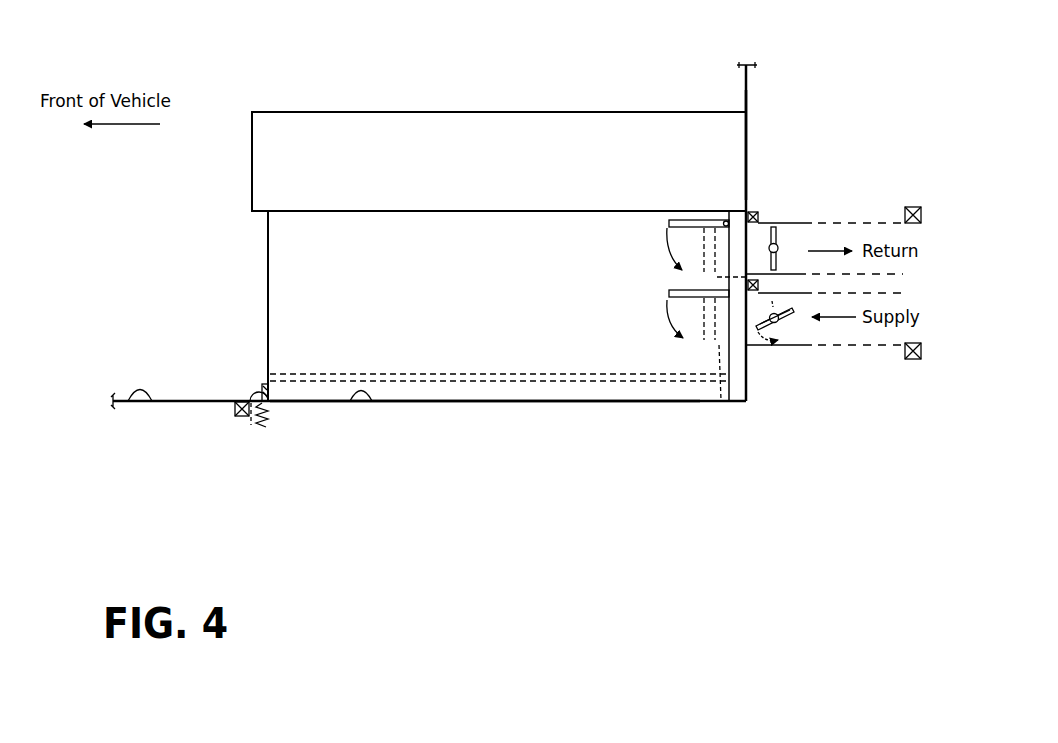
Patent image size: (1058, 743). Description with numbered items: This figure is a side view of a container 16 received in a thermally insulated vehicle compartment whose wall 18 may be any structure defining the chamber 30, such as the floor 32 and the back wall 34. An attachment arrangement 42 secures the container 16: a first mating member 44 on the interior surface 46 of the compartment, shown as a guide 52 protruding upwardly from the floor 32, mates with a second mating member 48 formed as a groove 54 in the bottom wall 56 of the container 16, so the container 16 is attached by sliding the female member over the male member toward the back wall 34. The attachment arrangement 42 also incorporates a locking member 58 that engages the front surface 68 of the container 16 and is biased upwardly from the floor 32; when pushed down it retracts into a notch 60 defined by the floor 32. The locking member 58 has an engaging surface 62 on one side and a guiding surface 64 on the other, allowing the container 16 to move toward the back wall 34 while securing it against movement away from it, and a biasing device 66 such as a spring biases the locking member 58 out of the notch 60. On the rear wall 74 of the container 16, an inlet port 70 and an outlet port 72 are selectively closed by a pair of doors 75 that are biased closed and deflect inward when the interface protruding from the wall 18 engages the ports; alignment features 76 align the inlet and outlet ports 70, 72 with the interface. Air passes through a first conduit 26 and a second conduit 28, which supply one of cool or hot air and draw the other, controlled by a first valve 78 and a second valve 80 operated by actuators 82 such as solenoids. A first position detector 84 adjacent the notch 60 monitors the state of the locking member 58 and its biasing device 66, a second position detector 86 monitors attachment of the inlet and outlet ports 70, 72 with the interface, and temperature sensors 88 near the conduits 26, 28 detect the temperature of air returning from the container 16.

The container 16 is at (250, 110).
The wall 18 is at (755, 88).
The first conduit 26 is at (845, 221).
The second conduit 28 is at (843, 346).
The chamber 30 is at (150, 333).
The floor 32 is at (482, 403).
The back wall 34 is at (744, 100).
The attachment arrangement 42 is at (345, 318).
The first mating member 44 is at (392, 372).
The interior surface 46 is at (129, 400).
The second mating member 48 is at (563, 368).
The guide 52 is at (486, 381).
The groove 54 is at (537, 375).
The bottom wall 56 is at (375, 401).
The locking member 58 is at (262, 366).
The notch 60 is at (251, 427).
The engaging surface 62 is at (285, 403).
The guiding surface 64 is at (252, 390).
The biasing device 66 is at (259, 428).
The front surface 68 is at (267, 273).
The inlet port 70 is at (697, 338).
The outlet port 72 is at (697, 250).
The rear wall 74 is at (720, 278).
The doors 75 is at (690, 221).
The alignment feature 76 is at (759, 214).
The first valve 78 is at (790, 322).
The second valve 80 is at (778, 231).
The actuator 82 is at (782, 246).
The first position detector 84 is at (234, 412).
The second position detector 86 is at (750, 214).
The temperature sensor 88 is at (920, 211).